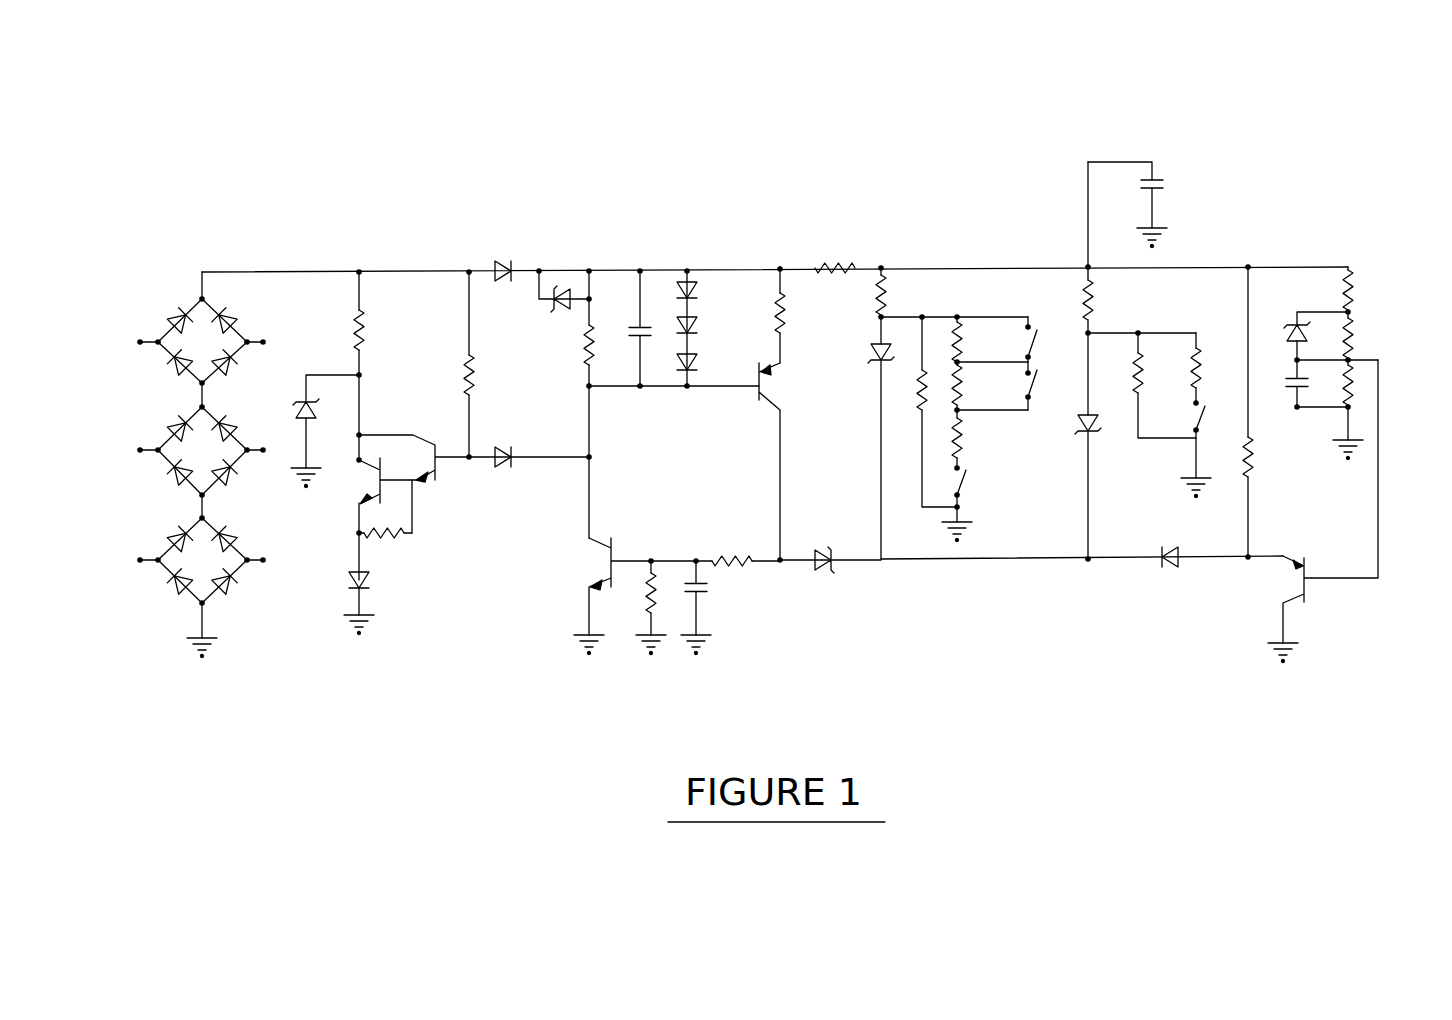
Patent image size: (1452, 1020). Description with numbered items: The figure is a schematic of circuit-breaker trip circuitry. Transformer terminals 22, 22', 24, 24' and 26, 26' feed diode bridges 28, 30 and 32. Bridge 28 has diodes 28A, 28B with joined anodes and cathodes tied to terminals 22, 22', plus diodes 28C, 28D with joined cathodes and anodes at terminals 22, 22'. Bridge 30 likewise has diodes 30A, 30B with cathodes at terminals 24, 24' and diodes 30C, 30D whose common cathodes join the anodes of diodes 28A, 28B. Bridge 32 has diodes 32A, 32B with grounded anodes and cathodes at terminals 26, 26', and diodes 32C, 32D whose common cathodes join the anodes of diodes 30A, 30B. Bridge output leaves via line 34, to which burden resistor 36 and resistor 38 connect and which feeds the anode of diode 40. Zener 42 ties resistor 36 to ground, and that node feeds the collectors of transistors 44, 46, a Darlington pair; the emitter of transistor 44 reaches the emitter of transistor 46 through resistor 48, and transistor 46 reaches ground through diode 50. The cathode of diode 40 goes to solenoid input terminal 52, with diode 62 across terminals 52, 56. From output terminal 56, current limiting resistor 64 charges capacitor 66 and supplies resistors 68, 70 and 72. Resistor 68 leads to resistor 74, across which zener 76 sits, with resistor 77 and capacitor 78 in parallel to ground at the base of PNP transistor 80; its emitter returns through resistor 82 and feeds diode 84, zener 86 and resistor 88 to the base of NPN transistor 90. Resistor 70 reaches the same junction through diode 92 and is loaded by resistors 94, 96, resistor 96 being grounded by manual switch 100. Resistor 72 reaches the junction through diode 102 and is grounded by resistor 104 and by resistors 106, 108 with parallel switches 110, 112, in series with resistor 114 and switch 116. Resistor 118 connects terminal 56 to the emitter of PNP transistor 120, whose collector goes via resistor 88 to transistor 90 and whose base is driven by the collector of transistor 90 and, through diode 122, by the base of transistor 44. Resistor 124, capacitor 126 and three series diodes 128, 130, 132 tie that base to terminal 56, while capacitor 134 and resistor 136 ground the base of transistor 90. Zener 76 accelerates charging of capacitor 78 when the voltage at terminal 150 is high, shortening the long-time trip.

The terminal 22 is at (107, 345).
The terminal 22' is at (288, 325).
The terminal 24 is at (103, 448).
The terminal 24' is at (287, 476).
The terminal 26 is at (101, 562).
The terminal 26' is at (292, 571).
The diode bridge 28 is at (201, 338).
The diode 28A is at (172, 370).
The diode 28B is at (236, 362).
The diode 28C is at (234, 318).
The diode 28D is at (176, 314).
The diode bridge 30 is at (180, 456).
The diode 30A is at (172, 473).
The diode 30B is at (228, 480).
The diode 30C is at (226, 426).
The diode 30D is at (175, 426).
The diode bridge 32 is at (193, 588).
The diode 32A is at (174, 584).
The diode 32B is at (240, 582).
The diode 32C is at (238, 536).
The diode 32D is at (174, 535).
The line 34 is at (262, 272).
The burden resistor 36 is at (370, 325).
The resistor 38 is at (478, 372).
The diode 40 is at (500, 262).
The zener 42 is at (316, 405).
The transistor 44 is at (441, 474).
The transistor 46 is at (372, 484).
The resistor 48 is at (393, 540).
The diode 50 is at (370, 582).
The input terminal 52 is at (539, 271).
The output terminal 56 is at (589, 271).
The diode 62 is at (558, 312).
The current limiting resistor 64 is at (838, 262).
The capacitor 66 is at (1165, 184).
The resistor 68 is at (1358, 292).
The resistor 70 is at (1098, 302).
The resistor 72 is at (892, 290).
The resistor 74 is at (1358, 336).
The zener 76 is at (1292, 330).
The resistor 77 is at (1357, 395).
The capacitor 78 is at (1290, 386).
The transistor 80 is at (1316, 602).
The resistor 82 is at (1258, 466).
The diode 84 is at (1172, 570).
The zener 86 is at (835, 572).
The resistor 88 is at (738, 568).
The transistor 90 is at (615, 533).
The diode 92 is at (1096, 434).
The resistor 94 is at (1132, 396).
The resistor 96 is at (1205, 352).
The manual switch 100 is at (1222, 395).
The diode 102 is at (875, 362).
The resistor 104 is at (917, 395).
The resistor 106 is at (962, 354).
The resistor 108 is at (963, 398).
The switch 110 is at (1034, 340).
The switch 112 is at (1034, 390).
The resistor 114 is at (968, 432).
The switch 116 is at (968, 485).
The resistor 118 is at (787, 312).
The transistor 120 is at (752, 412).
The diode 122 is at (505, 470).
The resistor 124 is at (594, 342).
The capacitor 126 is at (636, 327).
The diode 128 is at (700, 297).
The diode 130 is at (700, 333).
The diode 132 is at (700, 366).
The capacitor 134 is at (706, 592).
The resistor 136 is at (645, 600).
The terminal 150 is at (1087, 267).